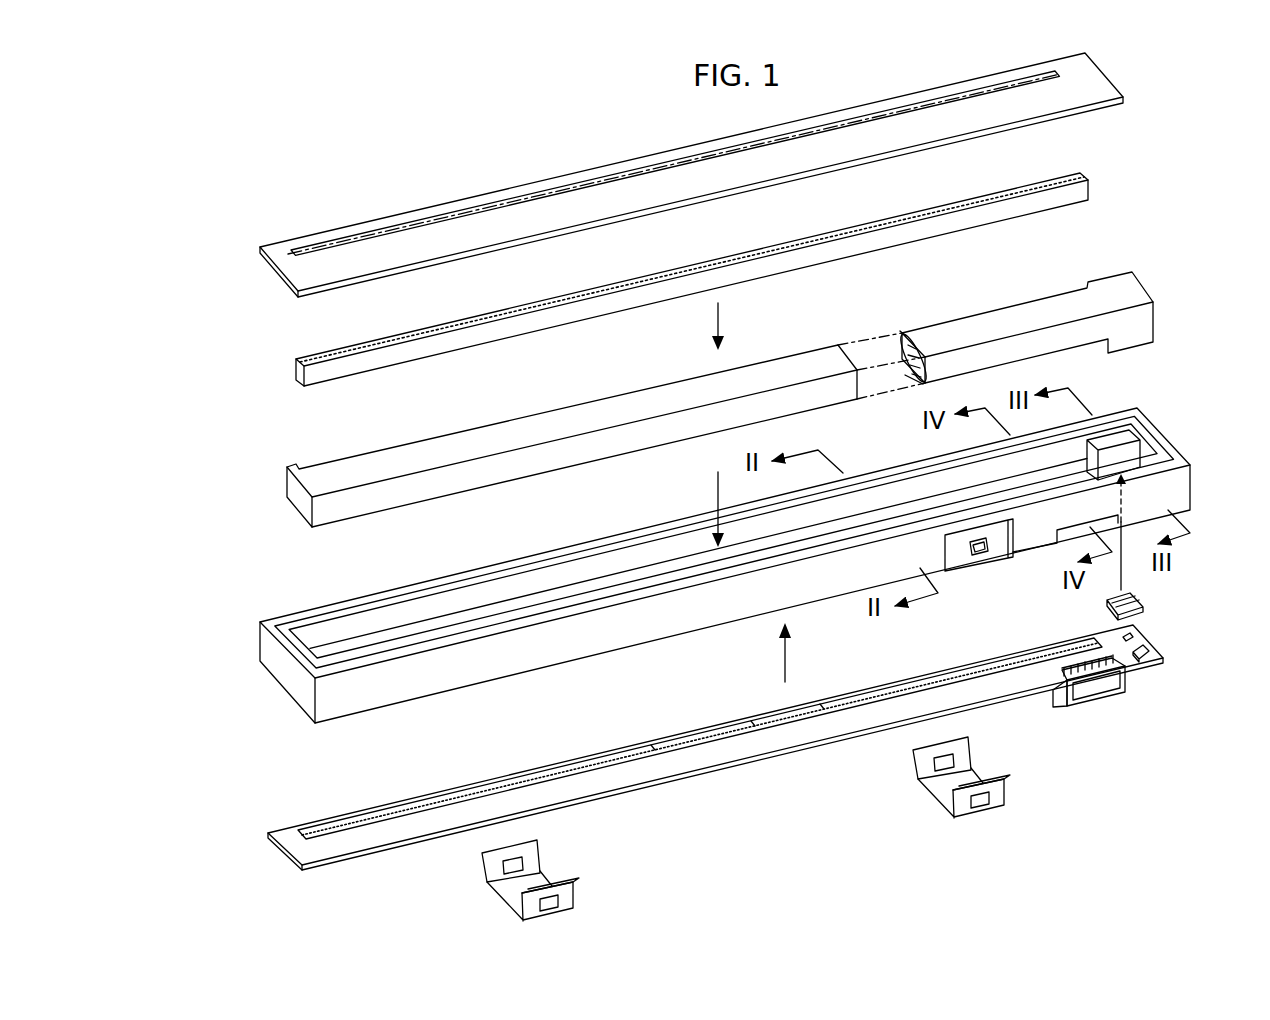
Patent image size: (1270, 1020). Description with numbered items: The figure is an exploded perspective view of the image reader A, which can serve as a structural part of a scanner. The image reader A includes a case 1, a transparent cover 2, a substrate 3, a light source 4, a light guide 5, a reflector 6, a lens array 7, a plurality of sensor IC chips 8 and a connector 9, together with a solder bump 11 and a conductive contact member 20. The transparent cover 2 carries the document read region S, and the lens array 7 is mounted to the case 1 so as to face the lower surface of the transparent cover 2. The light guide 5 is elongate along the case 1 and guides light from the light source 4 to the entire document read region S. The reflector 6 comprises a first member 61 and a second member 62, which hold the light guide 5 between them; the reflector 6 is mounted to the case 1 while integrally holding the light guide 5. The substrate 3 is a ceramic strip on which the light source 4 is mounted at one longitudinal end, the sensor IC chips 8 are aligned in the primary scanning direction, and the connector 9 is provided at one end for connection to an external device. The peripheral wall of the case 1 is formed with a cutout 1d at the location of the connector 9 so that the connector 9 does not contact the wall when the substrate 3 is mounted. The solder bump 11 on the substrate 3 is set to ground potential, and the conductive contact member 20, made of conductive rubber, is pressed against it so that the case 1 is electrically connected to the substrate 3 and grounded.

The case 1 is at (1182, 490).
The cutout 1d is at (1077, 528).
The transparent cover 2 is at (1100, 83).
The substrate 3 is at (1147, 642).
The light source 4 is at (1138, 661).
The light guide 5 is at (900, 333).
The reflector 6 is at (1145, 278).
The first member 61 is at (899, 358).
The second member 62 is at (917, 387).
The lens array 7 is at (1083, 192).
The sensor IC chips 8 is at (822, 707).
The connector 9 is at (1072, 701).
The solder bump 11 is at (1128, 636).
The conductive contact member 20 is at (1143, 605).
The document read region S is at (511, 189).
The image reader A is at (232, 187).